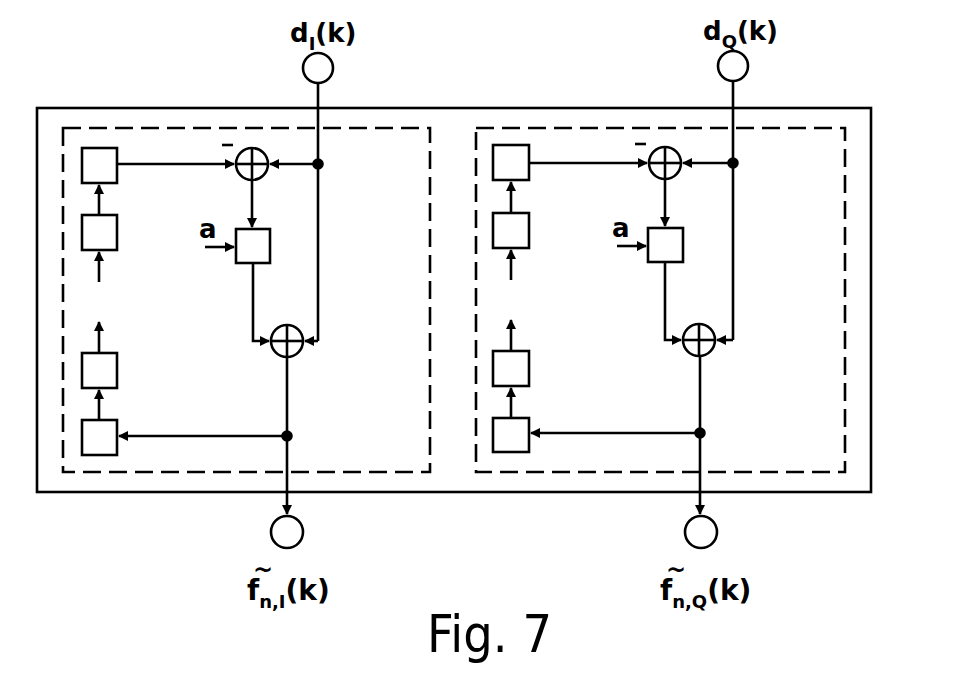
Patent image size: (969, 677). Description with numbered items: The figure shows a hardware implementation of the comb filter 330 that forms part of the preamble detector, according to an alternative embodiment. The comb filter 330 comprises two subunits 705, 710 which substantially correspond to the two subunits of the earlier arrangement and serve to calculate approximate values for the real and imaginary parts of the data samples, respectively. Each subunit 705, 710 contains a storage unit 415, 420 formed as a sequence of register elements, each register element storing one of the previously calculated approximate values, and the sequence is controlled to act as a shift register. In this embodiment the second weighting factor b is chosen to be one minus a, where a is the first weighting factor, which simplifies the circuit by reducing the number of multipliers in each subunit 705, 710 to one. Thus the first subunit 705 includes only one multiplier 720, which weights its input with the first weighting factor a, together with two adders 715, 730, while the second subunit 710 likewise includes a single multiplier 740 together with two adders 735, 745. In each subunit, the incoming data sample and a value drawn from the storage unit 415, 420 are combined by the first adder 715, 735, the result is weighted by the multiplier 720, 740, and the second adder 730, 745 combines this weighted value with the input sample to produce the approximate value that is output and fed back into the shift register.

The comb filter 330 is at (851, 107).
The subunit 705 is at (393, 128).
The subunit 710 is at (483, 128).
The storage unit 415 is at (119, 182).
The storage unit 420 is at (531, 180).
The adder 715 is at (258, 148).
The multiplier 720 is at (270, 252).
The adder 730 is at (297, 354).
The adder 735 is at (672, 147).
The multiplier 740 is at (683, 251).
The adder 745 is at (710, 353).